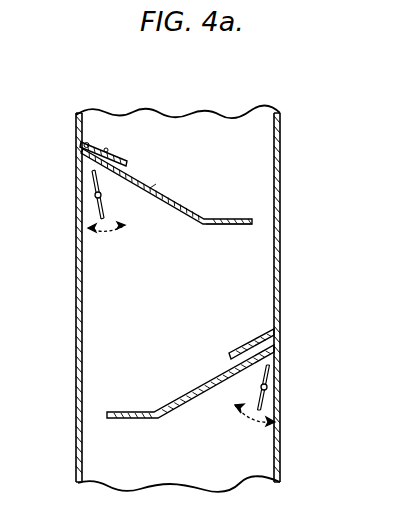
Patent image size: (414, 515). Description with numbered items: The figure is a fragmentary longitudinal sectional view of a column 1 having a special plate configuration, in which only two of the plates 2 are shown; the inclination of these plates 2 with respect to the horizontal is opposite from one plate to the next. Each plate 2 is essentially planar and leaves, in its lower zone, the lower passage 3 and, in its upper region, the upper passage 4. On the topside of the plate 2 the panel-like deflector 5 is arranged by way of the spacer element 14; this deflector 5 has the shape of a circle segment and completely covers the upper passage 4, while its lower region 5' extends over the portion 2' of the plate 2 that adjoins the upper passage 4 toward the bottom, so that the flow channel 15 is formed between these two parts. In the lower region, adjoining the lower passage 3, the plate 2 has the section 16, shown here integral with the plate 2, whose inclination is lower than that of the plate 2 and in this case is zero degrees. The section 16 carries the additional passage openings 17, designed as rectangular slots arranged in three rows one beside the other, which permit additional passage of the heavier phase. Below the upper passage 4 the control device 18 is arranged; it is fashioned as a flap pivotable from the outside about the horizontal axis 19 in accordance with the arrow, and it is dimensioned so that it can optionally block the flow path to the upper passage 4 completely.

The column 1 is at (77, 297).
The plate 2 is at (191, 385).
The portion of the plate 2' is at (166, 198).
The lower passage 3 is at (262, 223).
The upper passage 4 is at (91, 173).
The panel-like deflector 5 is at (117, 115).
The lower region of the deflector 5' is at (120, 142).
The spacer element 14 is at (88, 147).
The flow channel 15 is at (119, 168).
The section 16 is at (233, 219).
The additional passage openings 17 is at (247, 226).
The control device 18 is at (267, 372).
The horizontal axis 19 is at (268, 388).